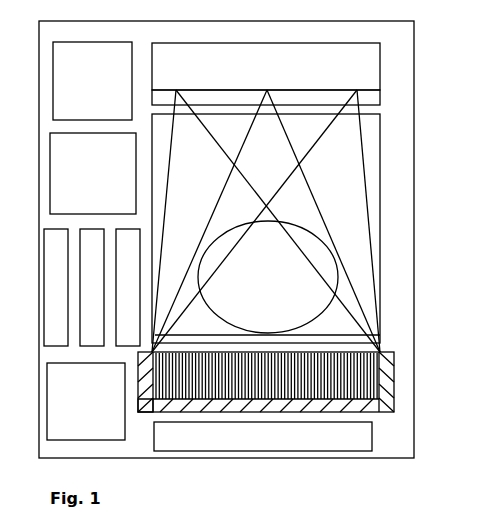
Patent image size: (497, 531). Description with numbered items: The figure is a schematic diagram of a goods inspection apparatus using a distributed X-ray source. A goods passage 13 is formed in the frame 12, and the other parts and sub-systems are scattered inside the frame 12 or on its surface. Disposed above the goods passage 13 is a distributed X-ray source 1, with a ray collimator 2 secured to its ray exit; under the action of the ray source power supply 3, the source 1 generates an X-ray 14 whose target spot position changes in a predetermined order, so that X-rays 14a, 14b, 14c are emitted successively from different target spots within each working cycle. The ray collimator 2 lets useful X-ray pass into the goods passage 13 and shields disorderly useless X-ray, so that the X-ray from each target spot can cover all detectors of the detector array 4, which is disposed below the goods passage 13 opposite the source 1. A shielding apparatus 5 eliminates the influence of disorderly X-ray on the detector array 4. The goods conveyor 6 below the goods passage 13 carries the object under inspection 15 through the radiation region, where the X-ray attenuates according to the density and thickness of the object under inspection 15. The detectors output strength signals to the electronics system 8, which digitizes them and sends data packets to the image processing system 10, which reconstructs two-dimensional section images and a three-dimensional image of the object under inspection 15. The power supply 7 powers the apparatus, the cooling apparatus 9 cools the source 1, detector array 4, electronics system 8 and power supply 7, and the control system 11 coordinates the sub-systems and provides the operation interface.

The distributed X-ray source 1 is at (266, 66).
The ray collimator 2 is at (367, 98).
The ray source power supply 3 is at (92, 81).
The detector array 4 is at (357, 390).
The shielding apparatus 5 is at (144, 402).
The goods conveyor 6 is at (341, 335).
The power supply 7 is at (86, 401).
The electronics system 8 is at (128, 287).
The cooling apparatus 9 is at (92, 287).
The image processing system 10 is at (56, 287).
The control system 11 is at (93, 173).
The frame 12 is at (413, 200).
The goods passage 13 is at (380, 135).
The X-ray 14 is at (266, 221).
The X-ray 14a is at (174, 119).
The X-ray 14b is at (252, 125).
The X-ray 14c is at (330, 127).
The object under inspection 15 is at (268, 277).